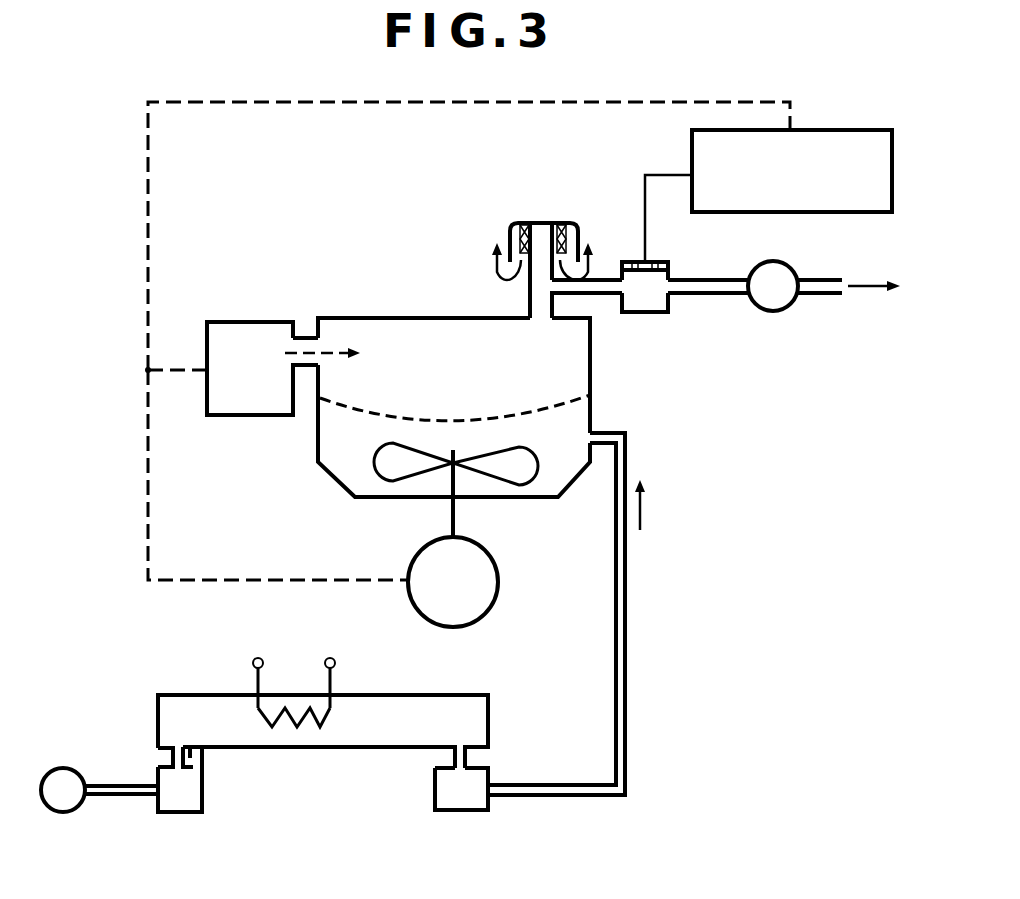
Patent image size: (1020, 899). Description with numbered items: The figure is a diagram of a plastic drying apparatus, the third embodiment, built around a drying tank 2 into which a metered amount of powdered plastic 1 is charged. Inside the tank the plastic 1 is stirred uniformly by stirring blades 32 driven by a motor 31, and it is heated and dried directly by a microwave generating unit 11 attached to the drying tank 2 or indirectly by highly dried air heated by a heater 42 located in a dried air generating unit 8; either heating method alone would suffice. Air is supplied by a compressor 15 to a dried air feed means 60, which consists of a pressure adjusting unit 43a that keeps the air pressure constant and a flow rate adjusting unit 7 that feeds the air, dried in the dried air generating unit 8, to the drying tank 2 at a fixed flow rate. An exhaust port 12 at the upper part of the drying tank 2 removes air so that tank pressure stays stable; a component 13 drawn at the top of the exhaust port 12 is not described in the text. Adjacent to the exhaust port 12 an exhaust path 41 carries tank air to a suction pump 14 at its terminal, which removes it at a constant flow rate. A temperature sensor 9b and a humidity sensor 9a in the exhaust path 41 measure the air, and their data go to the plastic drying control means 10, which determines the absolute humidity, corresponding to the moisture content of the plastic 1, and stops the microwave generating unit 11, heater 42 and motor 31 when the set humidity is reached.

The plastic 1 is at (562, 430).
The drying tank 2 is at (590, 380).
The flow rate adjusting unit 7 is at (462, 812).
The dried air generating unit 8 is at (347, 735).
The humidity sensor 9a is at (668, 266).
The temperature sensor 9b is at (622, 265).
The plastic drying control means 10 is at (846, 130).
The microwave generating unit 11 is at (250, 318).
The exhaust port 12 is at (533, 298).
The filter 13 is at (528, 222).
The suction pump 14 is at (773, 261).
The compressor 15 is at (62, 768).
The motor 31 is at (498, 592).
The stirring blades 32 is at (518, 470).
The exhaust path 41 is at (707, 295).
The heater 42 is at (293, 700).
The inlet valve 43a is at (178, 814).
The dried air feed means 60 is at (398, 692).